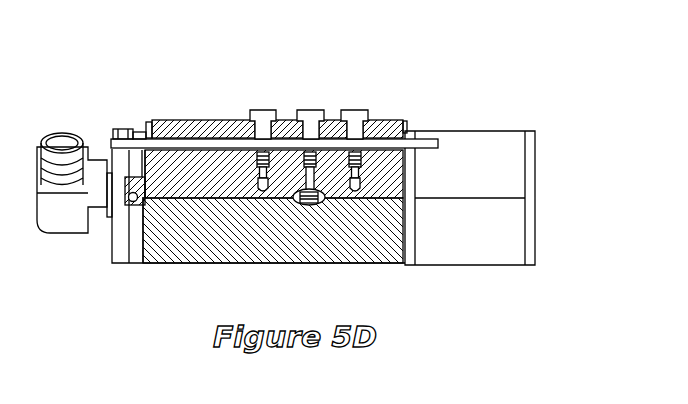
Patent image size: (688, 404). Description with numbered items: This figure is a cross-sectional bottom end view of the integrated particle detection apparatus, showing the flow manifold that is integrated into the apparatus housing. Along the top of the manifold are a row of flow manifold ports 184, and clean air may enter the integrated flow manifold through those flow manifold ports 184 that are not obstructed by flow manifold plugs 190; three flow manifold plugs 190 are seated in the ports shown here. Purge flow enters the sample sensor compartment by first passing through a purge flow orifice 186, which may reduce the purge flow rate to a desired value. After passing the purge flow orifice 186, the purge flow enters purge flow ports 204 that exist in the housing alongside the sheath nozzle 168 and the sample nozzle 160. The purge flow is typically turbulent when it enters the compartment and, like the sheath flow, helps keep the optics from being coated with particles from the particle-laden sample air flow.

The sample nozzle 160 is at (302, 199).
The sheath nozzle 168 is at (355, 199).
The flow manifold port 184 is at (152, 119).
The purge flow orifice 186 is at (363, 158).
The flow manifold plug 190 is at (257, 110).
The purge flow port 204 is at (258, 170).